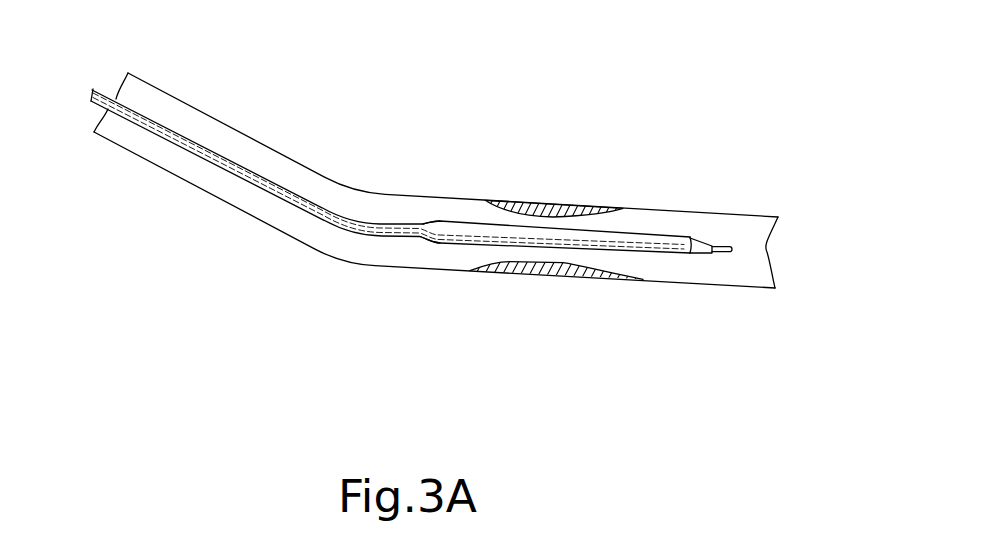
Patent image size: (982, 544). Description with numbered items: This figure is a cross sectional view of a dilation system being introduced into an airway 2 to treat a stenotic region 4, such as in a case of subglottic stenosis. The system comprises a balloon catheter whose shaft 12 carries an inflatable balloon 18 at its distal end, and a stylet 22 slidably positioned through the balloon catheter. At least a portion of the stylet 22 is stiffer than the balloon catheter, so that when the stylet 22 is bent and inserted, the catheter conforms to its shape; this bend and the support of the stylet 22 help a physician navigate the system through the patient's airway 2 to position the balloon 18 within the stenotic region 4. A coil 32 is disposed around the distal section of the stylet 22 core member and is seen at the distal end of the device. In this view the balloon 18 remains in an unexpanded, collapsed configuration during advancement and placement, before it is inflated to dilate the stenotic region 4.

The airway 2 is at (155, 158).
The stenotic region 4 is at (555, 203).
The shaft 12 is at (296, 207).
The balloon 18 is at (455, 226).
The stylet 22 is at (255, 173).
The coil 32 is at (719, 246).